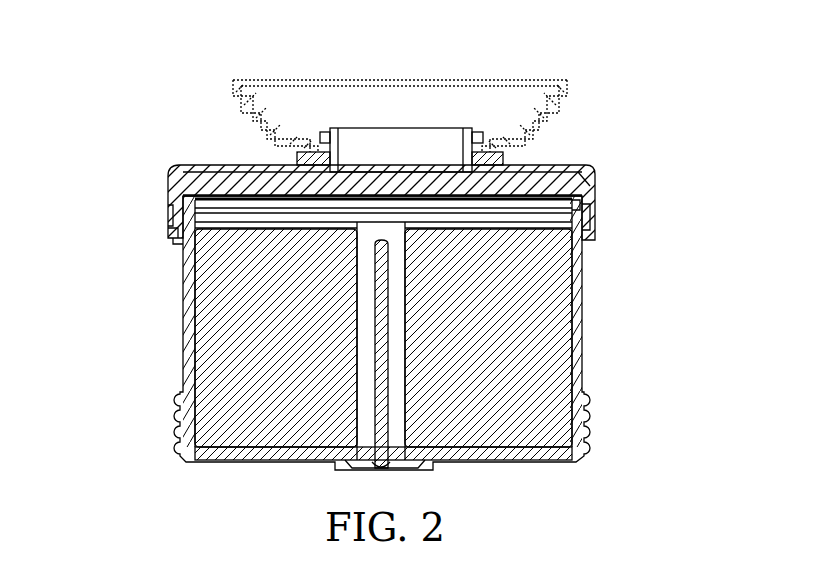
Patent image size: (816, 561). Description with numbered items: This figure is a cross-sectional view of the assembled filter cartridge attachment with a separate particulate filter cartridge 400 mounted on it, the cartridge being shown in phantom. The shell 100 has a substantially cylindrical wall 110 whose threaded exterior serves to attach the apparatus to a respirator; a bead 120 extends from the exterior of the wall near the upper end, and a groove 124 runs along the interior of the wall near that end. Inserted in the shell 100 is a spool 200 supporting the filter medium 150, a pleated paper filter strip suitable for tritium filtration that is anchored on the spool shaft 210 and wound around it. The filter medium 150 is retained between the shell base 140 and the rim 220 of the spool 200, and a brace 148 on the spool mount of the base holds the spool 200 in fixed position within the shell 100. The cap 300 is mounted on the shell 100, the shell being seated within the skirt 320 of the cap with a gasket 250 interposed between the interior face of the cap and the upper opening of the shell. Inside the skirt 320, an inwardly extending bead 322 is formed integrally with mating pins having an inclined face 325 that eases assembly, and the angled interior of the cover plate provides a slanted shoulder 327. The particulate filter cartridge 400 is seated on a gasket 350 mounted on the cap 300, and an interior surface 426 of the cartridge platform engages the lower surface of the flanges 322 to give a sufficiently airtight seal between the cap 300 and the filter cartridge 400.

The shell 100 is at (182, 338).
The wall 110 is at (187, 363).
The bead 120 is at (173, 224).
The groove 124 is at (176, 236).
The shell base (grille) 140 is at (217, 453).
The brace 148 is at (350, 470).
The filter medium 150 is at (250, 357).
The spool 200 is at (393, 352).
The spool shaft 210 is at (403, 298).
The rim 220 is at (470, 215).
The gasket 250 is at (552, 178).
The cap 300 is at (182, 175).
The skirt 320 is at (167, 212).
The bead (shelf, flange) 322 is at (326, 132).
The inclined face 325 is at (596, 196).
The slanted shoulder 327 is at (591, 167).
The gasket 350 is at (300, 158).
The particulate filter cartridge 400 is at (525, 93).
The interior surface 426 is at (327, 150).